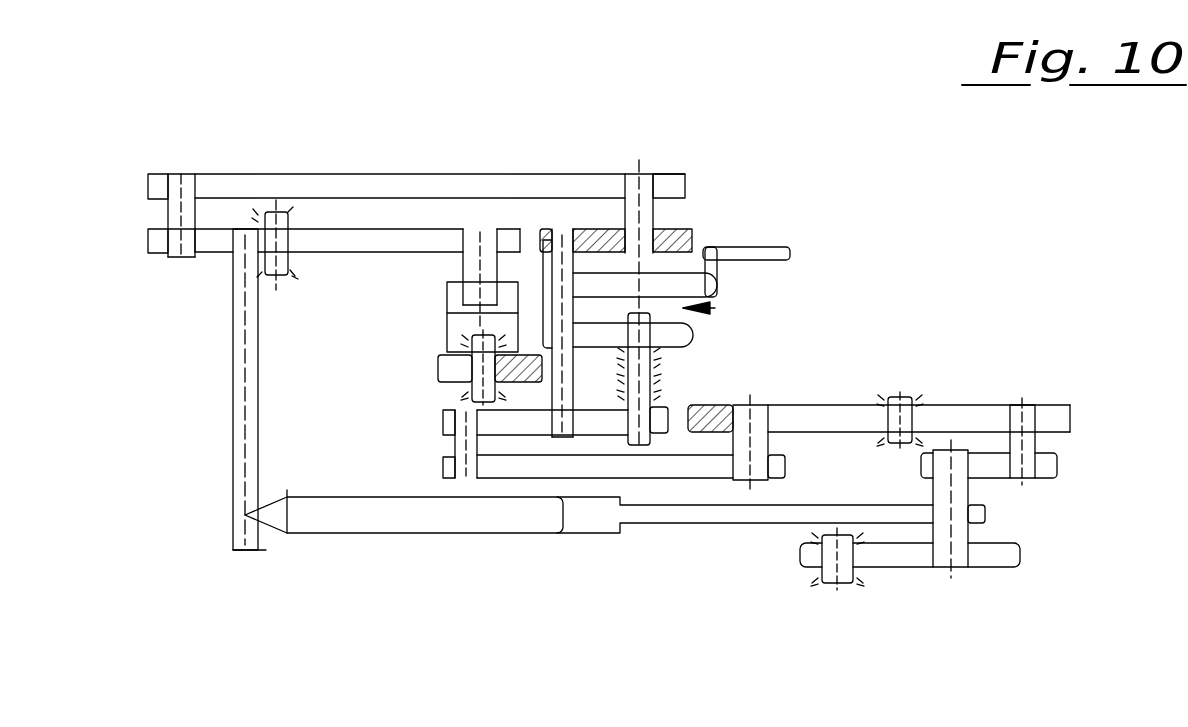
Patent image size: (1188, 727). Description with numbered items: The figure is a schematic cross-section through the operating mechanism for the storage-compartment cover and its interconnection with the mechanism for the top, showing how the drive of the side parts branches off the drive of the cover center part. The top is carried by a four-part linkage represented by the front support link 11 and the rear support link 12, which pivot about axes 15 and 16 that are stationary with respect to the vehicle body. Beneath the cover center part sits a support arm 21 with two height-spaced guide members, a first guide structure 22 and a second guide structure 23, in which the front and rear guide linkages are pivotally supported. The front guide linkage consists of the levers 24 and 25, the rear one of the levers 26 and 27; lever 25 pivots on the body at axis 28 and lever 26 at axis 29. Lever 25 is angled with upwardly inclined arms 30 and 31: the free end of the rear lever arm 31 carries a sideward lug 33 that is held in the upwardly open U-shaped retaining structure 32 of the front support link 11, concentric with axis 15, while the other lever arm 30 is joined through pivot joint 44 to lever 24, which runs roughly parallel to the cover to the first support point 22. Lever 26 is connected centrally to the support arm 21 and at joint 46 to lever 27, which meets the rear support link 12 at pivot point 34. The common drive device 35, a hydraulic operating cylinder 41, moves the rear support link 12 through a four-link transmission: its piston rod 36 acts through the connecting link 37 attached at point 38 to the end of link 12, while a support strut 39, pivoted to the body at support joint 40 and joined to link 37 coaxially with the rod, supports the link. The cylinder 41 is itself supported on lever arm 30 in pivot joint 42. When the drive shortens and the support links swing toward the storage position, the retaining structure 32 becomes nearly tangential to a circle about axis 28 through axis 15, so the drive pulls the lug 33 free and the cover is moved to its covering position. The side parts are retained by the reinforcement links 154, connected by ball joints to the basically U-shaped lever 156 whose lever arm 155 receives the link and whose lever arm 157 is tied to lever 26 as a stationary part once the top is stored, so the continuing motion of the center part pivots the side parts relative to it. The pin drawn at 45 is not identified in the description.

The front support link 11 is at (460, 371).
The rear support link 12 is at (967, 415).
The pivot axis 15 is at (482, 223).
The pivot axis 16 is at (902, 408).
The support arm 21 is at (682, 237).
The first guide structure 22 is at (640, 187).
The second guide structure 23 is at (560, 236).
The lever 24 is at (443, 187).
The lever 25 is at (226, 262).
The lever 26 is at (528, 420).
The lever 27 is at (498, 466).
The pivot axis 28 is at (278, 284).
The pivot axis 29 is at (640, 408).
The lever arm 30 is at (210, 242).
The rear lever arm 31 is at (379, 238).
The U-shaped retaining structure 32 is at (430, 331).
The lug 33 is at (489, 256).
The pivot point 34 is at (752, 414).
The drive device 35 is at (352, 553).
The piston rod 36 is at (661, 516).
The connecting link 37 is at (997, 466).
The connection point 38 is at (1024, 407).
The support strut 39 is at (901, 556).
The support joint 40 is at (834, 587).
The hydraulic operating cylinder 41 is at (316, 517).
The pivot joint 42 is at (247, 560).
The pivot joint 44 is at (183, 168).
The pivot pin 45 is at (953, 577).
The joint 46 is at (467, 444).
The reinforcement link 154 is at (775, 252).
The lever arm 155 is at (708, 285).
The lever 156 is at (712, 309).
The lever arm 157 is at (687, 339).